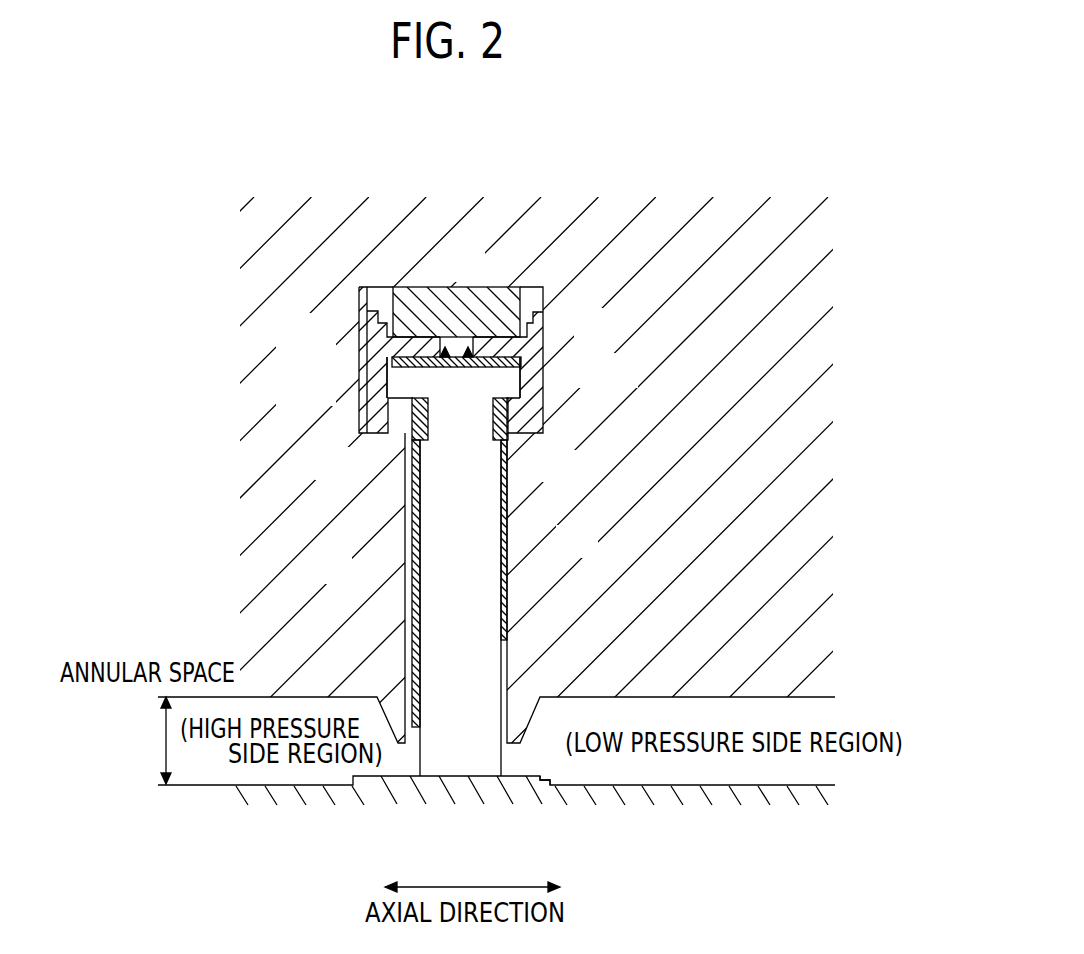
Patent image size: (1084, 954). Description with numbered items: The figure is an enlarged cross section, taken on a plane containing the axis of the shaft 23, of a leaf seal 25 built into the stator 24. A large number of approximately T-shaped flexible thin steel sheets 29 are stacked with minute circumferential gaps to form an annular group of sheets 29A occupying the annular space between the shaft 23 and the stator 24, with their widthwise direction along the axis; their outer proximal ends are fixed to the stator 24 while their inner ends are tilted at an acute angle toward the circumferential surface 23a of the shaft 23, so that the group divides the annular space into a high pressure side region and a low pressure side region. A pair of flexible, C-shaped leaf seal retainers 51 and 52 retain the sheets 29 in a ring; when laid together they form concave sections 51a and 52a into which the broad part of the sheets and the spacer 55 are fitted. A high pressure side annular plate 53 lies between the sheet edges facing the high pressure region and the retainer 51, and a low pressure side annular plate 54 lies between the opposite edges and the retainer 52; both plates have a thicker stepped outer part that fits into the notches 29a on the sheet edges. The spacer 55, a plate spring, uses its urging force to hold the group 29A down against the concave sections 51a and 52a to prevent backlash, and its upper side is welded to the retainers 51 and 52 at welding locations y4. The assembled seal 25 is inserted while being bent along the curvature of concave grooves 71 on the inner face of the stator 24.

The shaft 23 is at (323, 785).
The circumferential surface 23a is at (536, 790).
The stator 24 is at (790, 345).
The leaf seal 25 is at (336, 495).
The sheet 29 is at (455, 651).
The annular group of sheets 29A is at (469, 755).
The notch 29a is at (420, 414).
The leaf seal retainer 51 is at (393, 346).
The concave section 51a is at (390, 381).
The leaf seal retainer 52 is at (543, 340).
The concave section 52a is at (518, 384).
The high pressure side annular plate 53 is at (414, 548).
The low pressure side annular plate 54 is at (506, 548).
The spacer 55 is at (392, 361).
The concave groove 71 is at (433, 292).
The welding location y4 is at (468, 349).